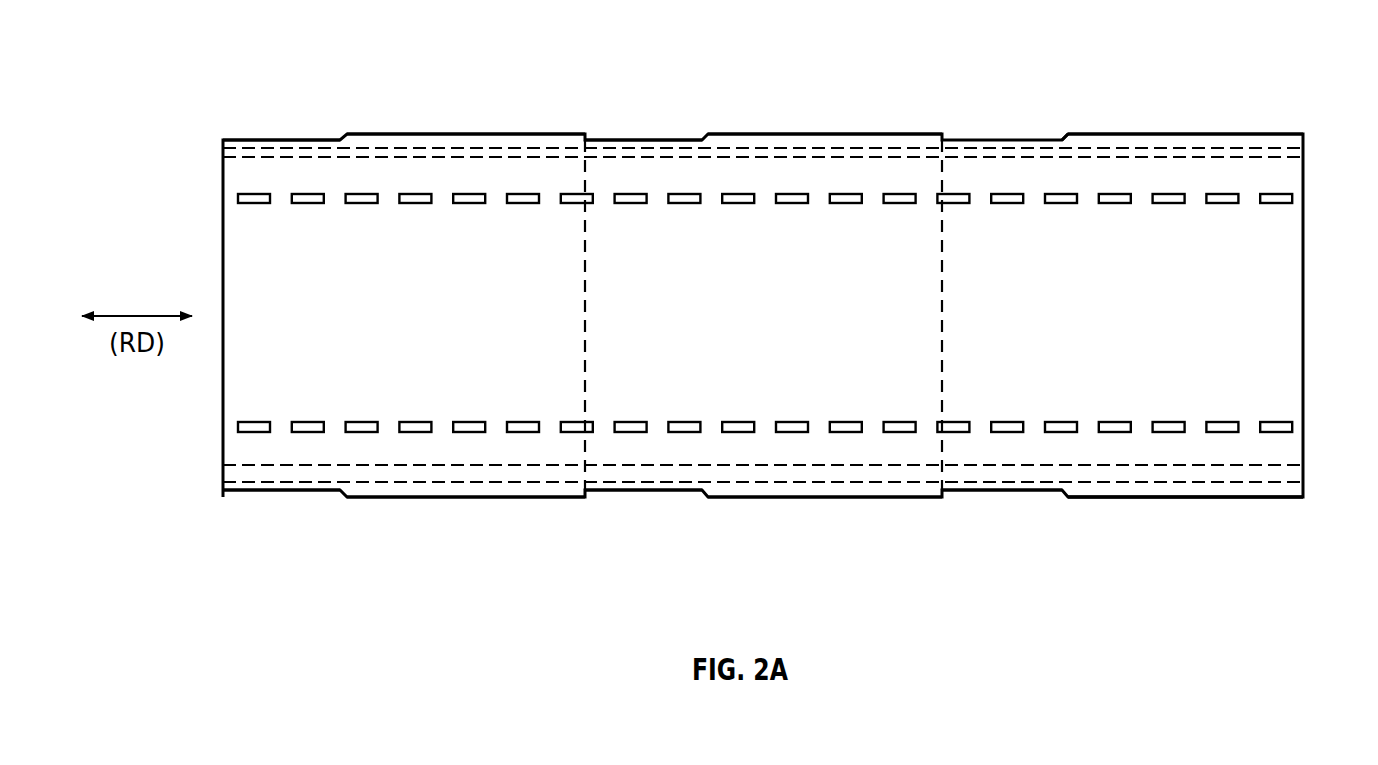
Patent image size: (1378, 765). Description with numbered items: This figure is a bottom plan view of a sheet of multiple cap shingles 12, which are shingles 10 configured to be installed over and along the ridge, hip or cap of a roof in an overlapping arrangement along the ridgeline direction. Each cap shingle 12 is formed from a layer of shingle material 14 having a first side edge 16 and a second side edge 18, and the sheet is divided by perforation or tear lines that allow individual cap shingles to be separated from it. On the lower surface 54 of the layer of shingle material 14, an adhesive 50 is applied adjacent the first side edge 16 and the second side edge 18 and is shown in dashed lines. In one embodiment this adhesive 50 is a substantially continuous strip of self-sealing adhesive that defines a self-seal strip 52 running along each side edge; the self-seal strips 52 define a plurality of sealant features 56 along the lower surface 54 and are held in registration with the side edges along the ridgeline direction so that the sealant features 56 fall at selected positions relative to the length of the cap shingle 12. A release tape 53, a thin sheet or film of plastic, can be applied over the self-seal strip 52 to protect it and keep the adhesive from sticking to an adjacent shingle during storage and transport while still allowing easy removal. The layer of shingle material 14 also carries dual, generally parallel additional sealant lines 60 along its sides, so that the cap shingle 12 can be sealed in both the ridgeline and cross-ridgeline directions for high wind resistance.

The shingles 10 is at (265, 507).
The cap shingle 12 is at (538, 165).
The layer of shingle material 14 is at (640, 497).
The first side edge 16 is at (375, 133).
The second side edge 18 is at (512, 498).
The adhesive 50 is at (298, 134).
The self-seal strip 52 is at (848, 148).
The release tape 53 is at (245, 176).
The lower surface 54 is at (415, 324).
The sealant features 56 is at (616, 134).
The additional sealant lines 60 is at (413, 194).